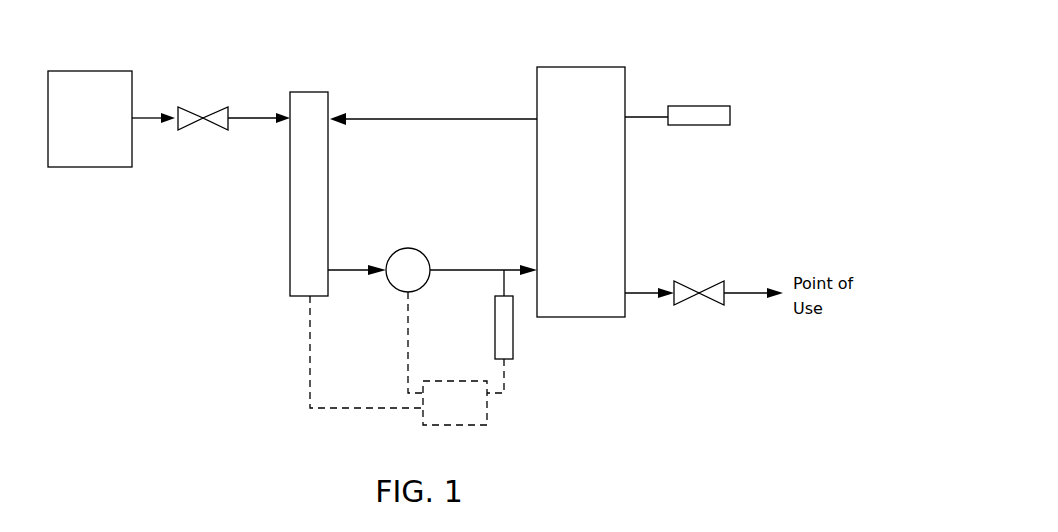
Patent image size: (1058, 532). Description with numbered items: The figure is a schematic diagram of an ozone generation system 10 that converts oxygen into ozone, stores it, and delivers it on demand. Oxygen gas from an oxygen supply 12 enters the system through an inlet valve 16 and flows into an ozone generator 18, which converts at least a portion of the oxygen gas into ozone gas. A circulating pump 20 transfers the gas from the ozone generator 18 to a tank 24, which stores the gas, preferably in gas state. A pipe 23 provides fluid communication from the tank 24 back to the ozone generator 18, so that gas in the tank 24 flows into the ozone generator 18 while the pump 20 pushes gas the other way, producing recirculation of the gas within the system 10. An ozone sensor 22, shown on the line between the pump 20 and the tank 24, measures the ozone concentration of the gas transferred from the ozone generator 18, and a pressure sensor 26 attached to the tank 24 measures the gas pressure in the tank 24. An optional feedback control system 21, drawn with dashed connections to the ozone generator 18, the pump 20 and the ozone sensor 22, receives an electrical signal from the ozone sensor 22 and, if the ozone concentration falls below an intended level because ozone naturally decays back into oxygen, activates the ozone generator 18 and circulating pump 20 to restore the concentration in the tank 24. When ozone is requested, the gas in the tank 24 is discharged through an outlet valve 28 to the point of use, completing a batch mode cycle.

The ozone generation system 10 is at (136, 29).
The oxygen supply 12 is at (78, 156).
The inlet valve 16 is at (183, 130).
The ozone generator 18 is at (290, 255).
The circulating pump 20 is at (408, 248).
The feedback control system 21 is at (407, 358).
The ozone sensor 22 is at (513, 328).
The pipe 23 is at (393, 118).
The tank 24 is at (577, 127).
The pressure sensor 26 is at (698, 106).
The outlet valve 28 is at (678, 305).